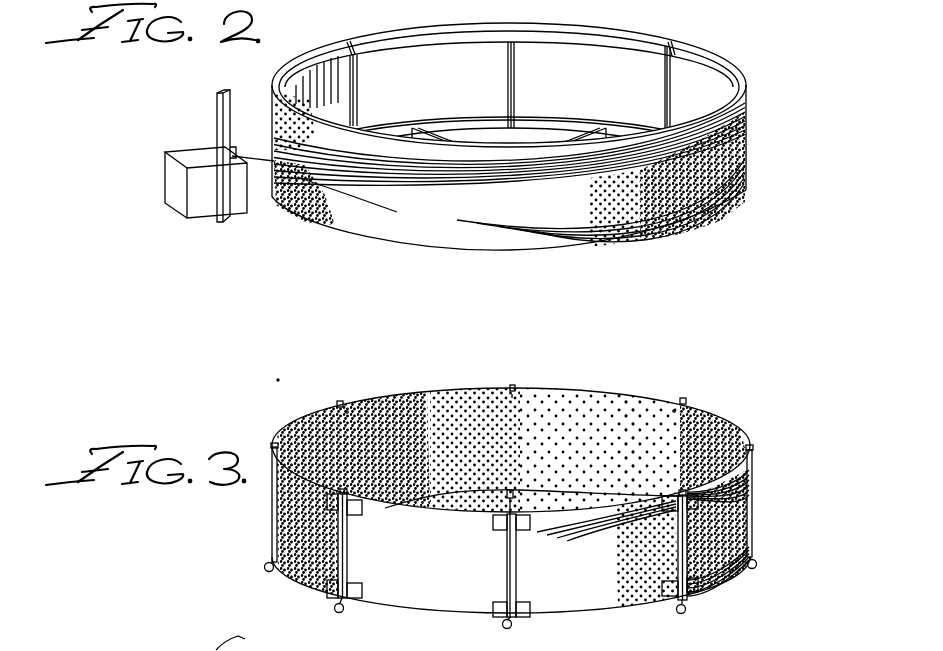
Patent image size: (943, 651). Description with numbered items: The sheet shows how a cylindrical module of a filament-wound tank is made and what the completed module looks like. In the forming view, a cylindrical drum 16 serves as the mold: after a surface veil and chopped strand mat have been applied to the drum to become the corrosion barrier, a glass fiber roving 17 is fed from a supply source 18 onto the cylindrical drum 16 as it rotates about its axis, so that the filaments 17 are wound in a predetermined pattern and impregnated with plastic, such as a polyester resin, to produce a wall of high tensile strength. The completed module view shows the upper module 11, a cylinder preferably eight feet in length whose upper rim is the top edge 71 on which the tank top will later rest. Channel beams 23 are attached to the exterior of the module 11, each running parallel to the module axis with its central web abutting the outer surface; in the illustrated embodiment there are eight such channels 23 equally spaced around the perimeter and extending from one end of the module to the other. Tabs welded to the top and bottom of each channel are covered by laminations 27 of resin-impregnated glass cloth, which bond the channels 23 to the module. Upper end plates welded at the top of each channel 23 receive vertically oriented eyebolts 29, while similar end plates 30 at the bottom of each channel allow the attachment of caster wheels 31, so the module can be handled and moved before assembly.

In FIG. 2, the cylindrical drum 16 is at (590, 33).
In FIG. 2, the glass fiber roving 17 is at (262, 157).
In FIG. 2, the supply source 18 is at (205, 150).
In FIG. 3, the upper module 11 is at (437, 384).
In FIG. 3, the top edge of the module 71 is at (723, 422).
In FIG. 3, the channel beams 23 is at (272, 517).
In FIG. 3, the laminations of resin-impregnated glass cloth 27 is at (327, 507).
In FIG. 3, the eyebolts 29 is at (514, 386).
In FIG. 3, the end plates 30 is at (338, 597).
In FIG. 3, the caster wheels 31 is at (263, 567).